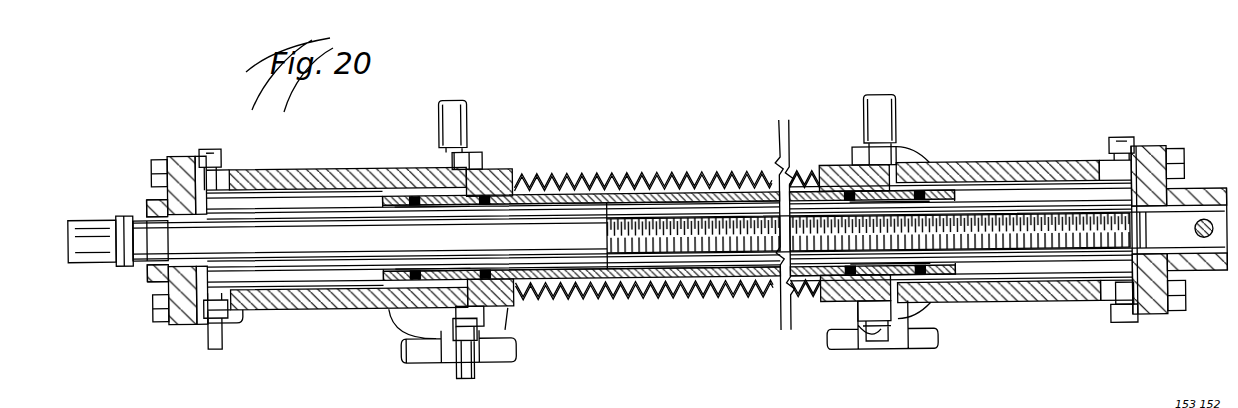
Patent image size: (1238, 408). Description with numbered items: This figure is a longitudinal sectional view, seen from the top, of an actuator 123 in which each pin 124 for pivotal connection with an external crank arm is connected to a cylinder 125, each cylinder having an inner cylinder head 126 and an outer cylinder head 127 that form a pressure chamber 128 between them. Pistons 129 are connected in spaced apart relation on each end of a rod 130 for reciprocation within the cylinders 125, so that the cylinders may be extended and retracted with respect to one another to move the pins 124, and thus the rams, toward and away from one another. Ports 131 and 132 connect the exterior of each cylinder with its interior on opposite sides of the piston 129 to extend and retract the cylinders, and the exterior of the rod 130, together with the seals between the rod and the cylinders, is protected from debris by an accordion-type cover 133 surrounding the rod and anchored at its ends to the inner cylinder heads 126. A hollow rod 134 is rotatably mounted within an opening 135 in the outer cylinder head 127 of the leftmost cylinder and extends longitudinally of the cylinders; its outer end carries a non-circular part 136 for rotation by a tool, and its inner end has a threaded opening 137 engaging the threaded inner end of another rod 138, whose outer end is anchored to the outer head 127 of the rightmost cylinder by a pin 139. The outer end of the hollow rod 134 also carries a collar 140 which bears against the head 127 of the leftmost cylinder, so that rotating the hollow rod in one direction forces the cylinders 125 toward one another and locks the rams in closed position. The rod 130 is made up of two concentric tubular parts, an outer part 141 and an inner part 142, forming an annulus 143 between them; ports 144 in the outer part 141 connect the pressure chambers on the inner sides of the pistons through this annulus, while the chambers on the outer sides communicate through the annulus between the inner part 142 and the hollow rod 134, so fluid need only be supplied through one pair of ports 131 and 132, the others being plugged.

The actuator 123 is at (582, 182).
The pin 124 is at (465, 106).
The cylinder 125 is at (264, 312).
The inner cylinder head 126 is at (507, 312).
The outer cylinder head 127 is at (150, 307).
The pressure chamber 128 is at (318, 288).
The piston 129 is at (452, 157).
The rod 130 is at (686, 297).
The port 131 is at (216, 173).
The port 132 is at (490, 180).
The accordion-type cover 133 is at (650, 180).
The hollow rod 134 is at (303, 208).
The opening 135 is at (180, 268).
The non-circular part 136 is at (92, 214).
The threaded opening 137 is at (740, 220).
The rod 138 is at (1078, 250).
The pin 139 is at (1201, 225).
The collar 140 is at (148, 194).
The outer tubular part 141 is at (610, 198).
The inner tubular part 142 is at (616, 272).
The annulus 143 is at (556, 195).
The port 144 is at (413, 196).